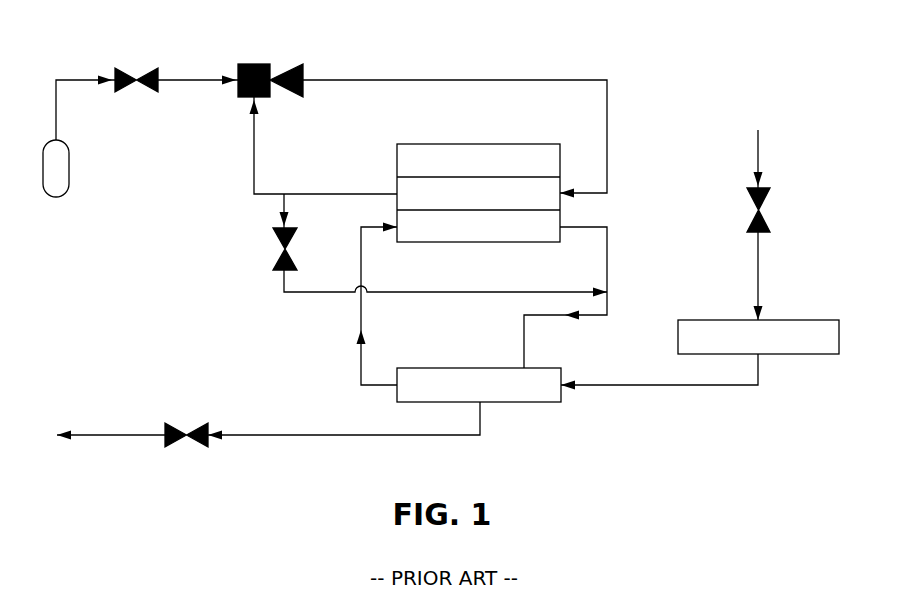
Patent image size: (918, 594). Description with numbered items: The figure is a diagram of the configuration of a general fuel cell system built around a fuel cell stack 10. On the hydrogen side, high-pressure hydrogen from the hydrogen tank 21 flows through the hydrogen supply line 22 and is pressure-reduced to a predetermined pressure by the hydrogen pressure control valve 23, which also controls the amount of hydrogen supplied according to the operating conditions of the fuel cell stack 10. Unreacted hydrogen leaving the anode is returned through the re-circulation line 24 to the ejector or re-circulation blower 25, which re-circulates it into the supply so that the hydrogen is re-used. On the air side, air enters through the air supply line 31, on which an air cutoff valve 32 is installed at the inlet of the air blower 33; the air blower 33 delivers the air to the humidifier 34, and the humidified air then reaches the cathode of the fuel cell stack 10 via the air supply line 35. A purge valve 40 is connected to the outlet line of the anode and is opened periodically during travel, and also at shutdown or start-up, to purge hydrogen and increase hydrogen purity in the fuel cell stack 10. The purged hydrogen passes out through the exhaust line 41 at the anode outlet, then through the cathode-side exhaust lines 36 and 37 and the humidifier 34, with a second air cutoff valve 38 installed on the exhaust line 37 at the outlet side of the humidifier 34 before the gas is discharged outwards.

The fuel cell stack 10 is at (397, 158).
The hydrogen tank 21 is at (69, 168).
The hydrogen supply line 22 is at (190, 78).
The hydrogen pressure control valve 23 is at (127, 90).
The re-circulation line 24 is at (254, 162).
The ejector or re-circulation blower 25 is at (257, 63).
The air supply line 31 is at (758, 262).
The air cutoff valve 32 is at (747, 196).
The air blower 33 is at (710, 320).
The humidifier 34 is at (535, 402).
The air supply line 35 is at (361, 362).
The exhaust line 36 is at (524, 345).
The exhaust line 37 is at (272, 435).
The air cutoff valve 38 is at (180, 423).
The purge valve 40 is at (273, 238).
The exhaust line 41 is at (314, 292).